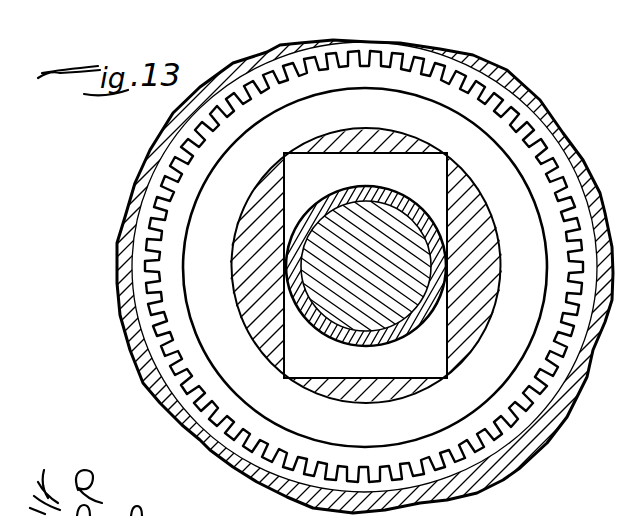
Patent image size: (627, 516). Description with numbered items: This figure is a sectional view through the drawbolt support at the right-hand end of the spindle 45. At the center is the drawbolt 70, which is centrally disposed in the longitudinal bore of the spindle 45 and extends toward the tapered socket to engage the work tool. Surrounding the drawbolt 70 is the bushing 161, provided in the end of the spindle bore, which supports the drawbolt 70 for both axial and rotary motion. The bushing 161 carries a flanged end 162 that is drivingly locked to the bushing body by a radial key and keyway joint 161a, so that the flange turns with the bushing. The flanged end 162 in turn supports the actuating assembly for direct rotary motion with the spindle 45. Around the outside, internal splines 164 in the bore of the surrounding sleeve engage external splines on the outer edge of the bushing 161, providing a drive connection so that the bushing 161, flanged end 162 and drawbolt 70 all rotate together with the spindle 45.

The internal splines 164 is at (330, 60).
The flanged end 162 is at (296, 107).
The spindle 45 is at (478, 208).
The radial key and keyway joint 161a is at (386, 135).
The bushing 161 is at (406, 186).
The drawbolt 70 is at (348, 212).